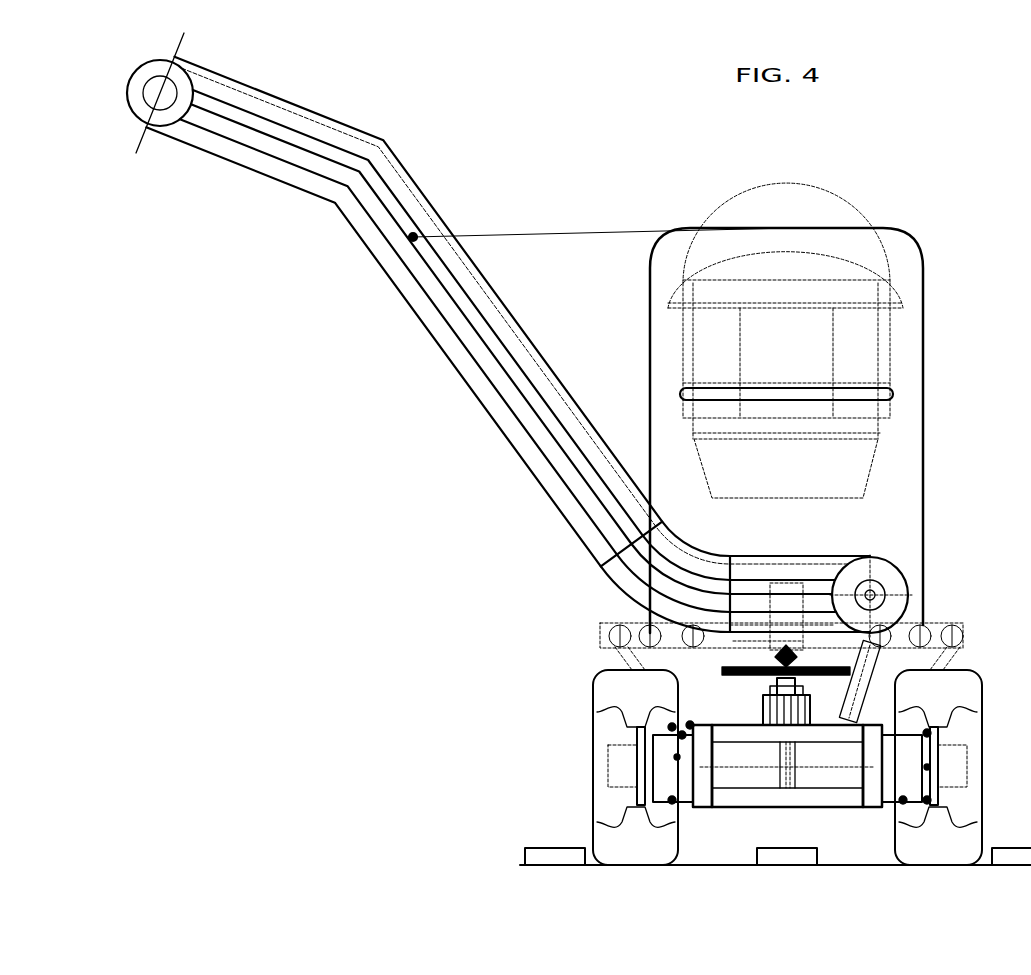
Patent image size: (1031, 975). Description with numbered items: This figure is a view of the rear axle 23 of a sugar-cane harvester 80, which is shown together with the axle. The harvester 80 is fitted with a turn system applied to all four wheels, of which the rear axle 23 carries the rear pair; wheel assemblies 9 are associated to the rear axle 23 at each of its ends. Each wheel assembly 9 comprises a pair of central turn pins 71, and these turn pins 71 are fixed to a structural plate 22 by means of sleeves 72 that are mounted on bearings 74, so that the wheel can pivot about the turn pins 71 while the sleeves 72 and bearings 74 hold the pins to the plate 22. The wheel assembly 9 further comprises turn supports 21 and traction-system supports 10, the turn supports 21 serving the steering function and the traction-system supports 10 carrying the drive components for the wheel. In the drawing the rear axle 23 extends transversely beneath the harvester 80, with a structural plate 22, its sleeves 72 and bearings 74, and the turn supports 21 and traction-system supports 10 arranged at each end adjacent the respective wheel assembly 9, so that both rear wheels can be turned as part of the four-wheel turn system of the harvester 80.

The sugar-cane harvester 80 is at (938, 265).
The wheel assembly 9 is at (602, 672).
The traction-system support 10 is at (608, 753).
The turn support 21 is at (653, 727).
The structural plate 22 is at (690, 808).
The rear axle 23 is at (763, 722).
The central turn pin 71 is at (673, 799).
The sleeve 72 is at (690, 725).
The bearing 74 is at (882, 730).